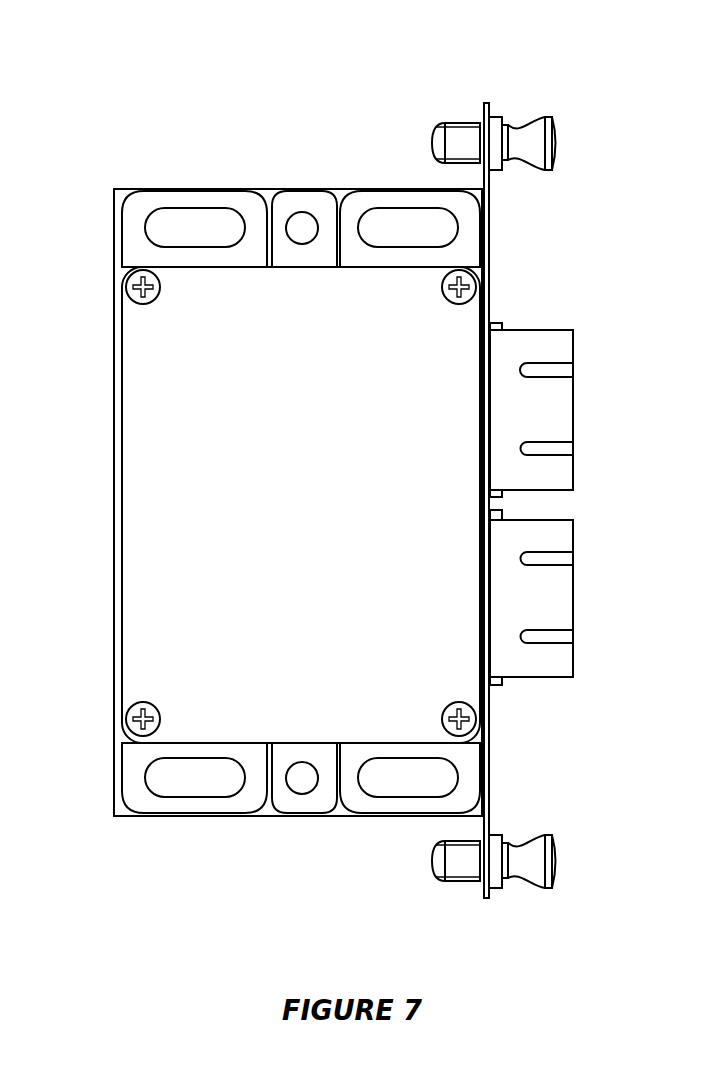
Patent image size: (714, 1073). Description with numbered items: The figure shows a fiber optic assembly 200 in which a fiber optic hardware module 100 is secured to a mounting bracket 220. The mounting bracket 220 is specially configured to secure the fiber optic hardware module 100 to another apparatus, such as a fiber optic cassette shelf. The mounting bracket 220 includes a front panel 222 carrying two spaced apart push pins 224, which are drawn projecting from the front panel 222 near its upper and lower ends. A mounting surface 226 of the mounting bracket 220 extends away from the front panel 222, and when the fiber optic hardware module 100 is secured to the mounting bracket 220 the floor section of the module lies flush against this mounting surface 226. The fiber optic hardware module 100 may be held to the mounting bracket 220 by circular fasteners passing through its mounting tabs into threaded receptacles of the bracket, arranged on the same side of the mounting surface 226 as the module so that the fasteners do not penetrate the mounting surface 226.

The fiber optic assembly 200 is at (198, 72).
The fiber optic hardware module 100 is at (162, 397).
The mounting bracket 220 is at (530, 70).
The front panel 222 is at (490, 250).
The push pins 224 is at (557, 132).
The mounting surface 226 is at (272, 193).